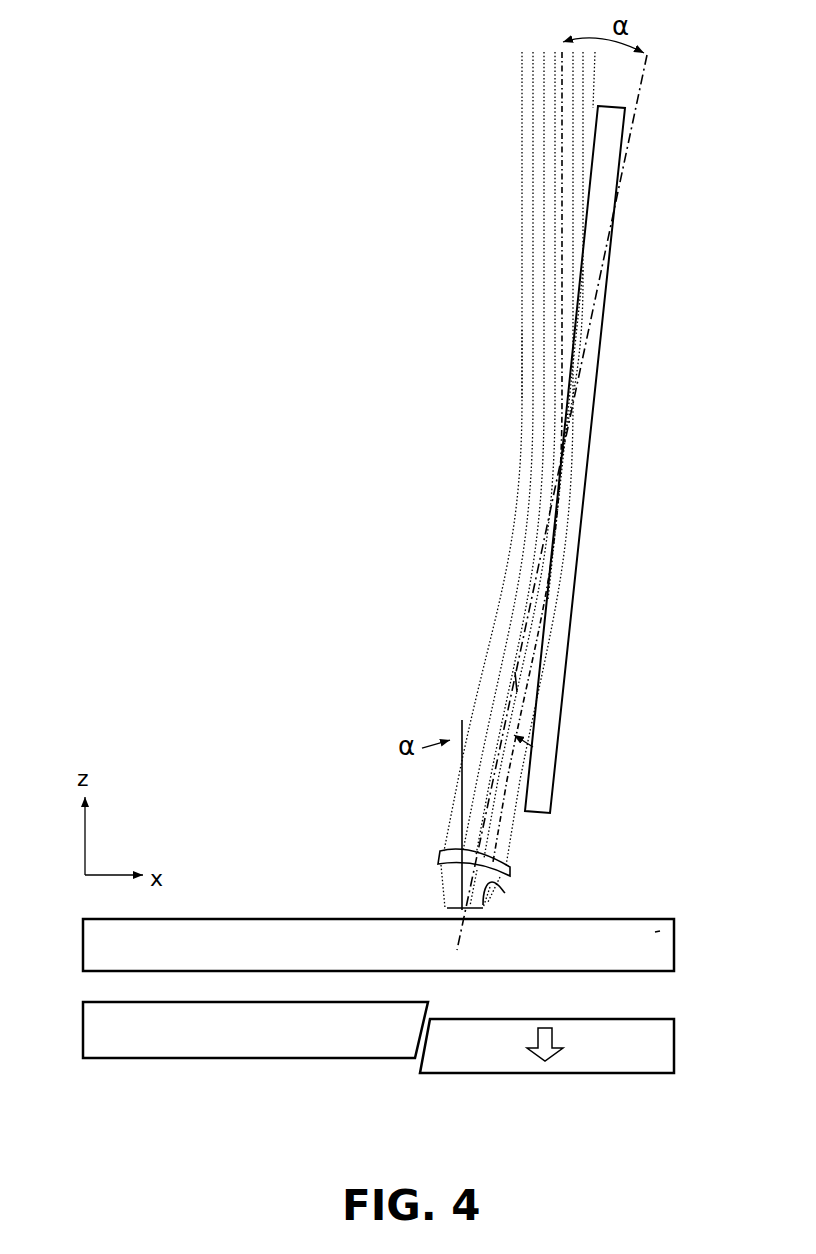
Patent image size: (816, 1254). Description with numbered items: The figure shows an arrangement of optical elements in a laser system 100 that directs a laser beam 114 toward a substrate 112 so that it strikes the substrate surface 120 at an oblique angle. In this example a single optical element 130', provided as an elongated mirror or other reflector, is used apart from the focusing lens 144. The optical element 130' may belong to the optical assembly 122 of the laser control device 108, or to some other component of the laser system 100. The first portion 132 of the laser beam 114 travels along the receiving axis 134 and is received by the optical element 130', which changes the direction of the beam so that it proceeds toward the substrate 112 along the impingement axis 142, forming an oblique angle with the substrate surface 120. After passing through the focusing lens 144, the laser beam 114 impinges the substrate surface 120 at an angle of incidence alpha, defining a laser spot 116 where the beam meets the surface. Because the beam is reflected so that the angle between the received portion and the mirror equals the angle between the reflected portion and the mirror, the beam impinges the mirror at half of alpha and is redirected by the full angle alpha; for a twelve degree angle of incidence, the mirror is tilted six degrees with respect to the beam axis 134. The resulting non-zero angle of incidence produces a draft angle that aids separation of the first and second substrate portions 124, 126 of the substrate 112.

The laser system 100 is at (219, 283).
The control device 108 is at (278, 406).
The optical assembly 122 is at (340, 492).
The laser beam 114 is at (522, 118).
The receiving axis 134 is at (562, 268).
The first portion of the laser beam 132 is at (524, 347).
The optical element 130' is at (615, 459).
The impingement axis 142 is at (515, 681).
The focusing lens 144 is at (438, 853).
The laser spot 116 is at (505, 893).
The substrate surface 120 is at (231, 918).
The substrate 112 is at (655, 932).
The first substrate portion 124 is at (83, 943).
The second substrate portion 126 is at (675, 953).